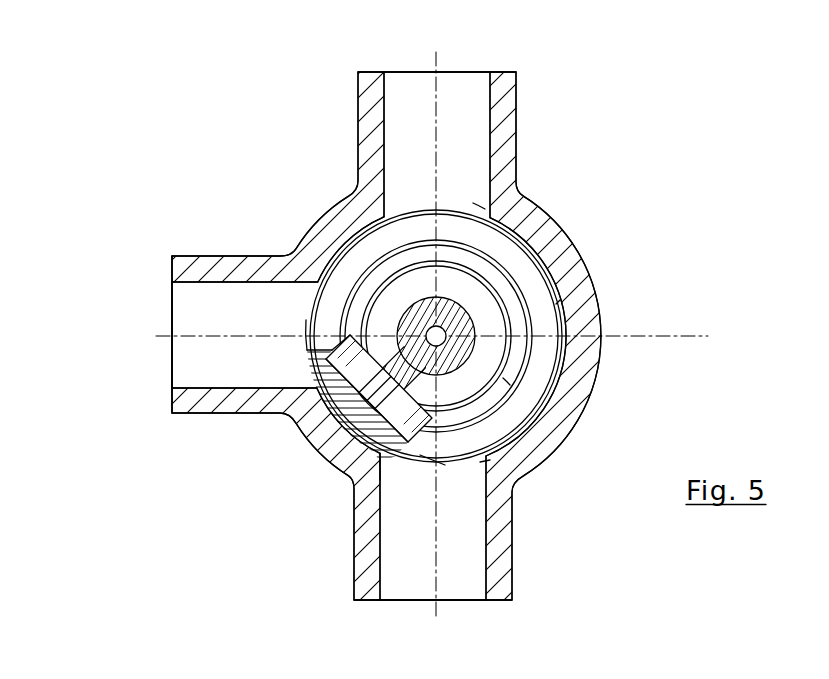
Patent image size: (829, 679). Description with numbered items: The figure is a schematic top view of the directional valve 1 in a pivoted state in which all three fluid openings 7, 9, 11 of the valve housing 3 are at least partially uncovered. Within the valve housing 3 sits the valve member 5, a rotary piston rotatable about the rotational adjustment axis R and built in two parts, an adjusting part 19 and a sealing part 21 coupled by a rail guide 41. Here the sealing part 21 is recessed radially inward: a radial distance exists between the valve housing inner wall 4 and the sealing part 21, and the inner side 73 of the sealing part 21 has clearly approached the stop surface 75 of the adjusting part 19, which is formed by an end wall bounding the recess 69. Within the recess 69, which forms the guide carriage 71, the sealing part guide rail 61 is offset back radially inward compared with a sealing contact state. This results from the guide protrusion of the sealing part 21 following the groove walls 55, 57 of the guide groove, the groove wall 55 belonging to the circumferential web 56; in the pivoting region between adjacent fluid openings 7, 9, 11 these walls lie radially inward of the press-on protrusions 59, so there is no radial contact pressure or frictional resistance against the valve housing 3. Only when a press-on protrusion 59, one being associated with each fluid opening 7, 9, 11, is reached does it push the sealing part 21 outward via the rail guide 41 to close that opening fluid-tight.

The directional valve 1 is at (671, 121).
The valve housing 3 is at (580, 213).
The valve housing inner wall 4 is at (386, 478).
The valve member 5 is at (463, 285).
The fluid opening 7 is at (177, 366).
The fluid opening 9 is at (470, 85).
The fluid opening 11 is at (463, 586).
The adjusting part 19 is at (478, 337).
The sealing part 21 is at (356, 488).
The rail guide 41 is at (425, 375).
The groove wall 55 is at (366, 265).
The circumferential web 56 is at (520, 392).
The groove wall 57 is at (515, 270).
The press-on protrusion 59 is at (305, 331).
The sealing part guide rail 61 is at (445, 465).
The recess 69 is at (418, 250).
The guide carriage 71 is at (352, 333).
The inner side 73 is at (313, 328).
The stop surface 75 is at (333, 393).
The rotational adjustment axis R is at (560, 300).